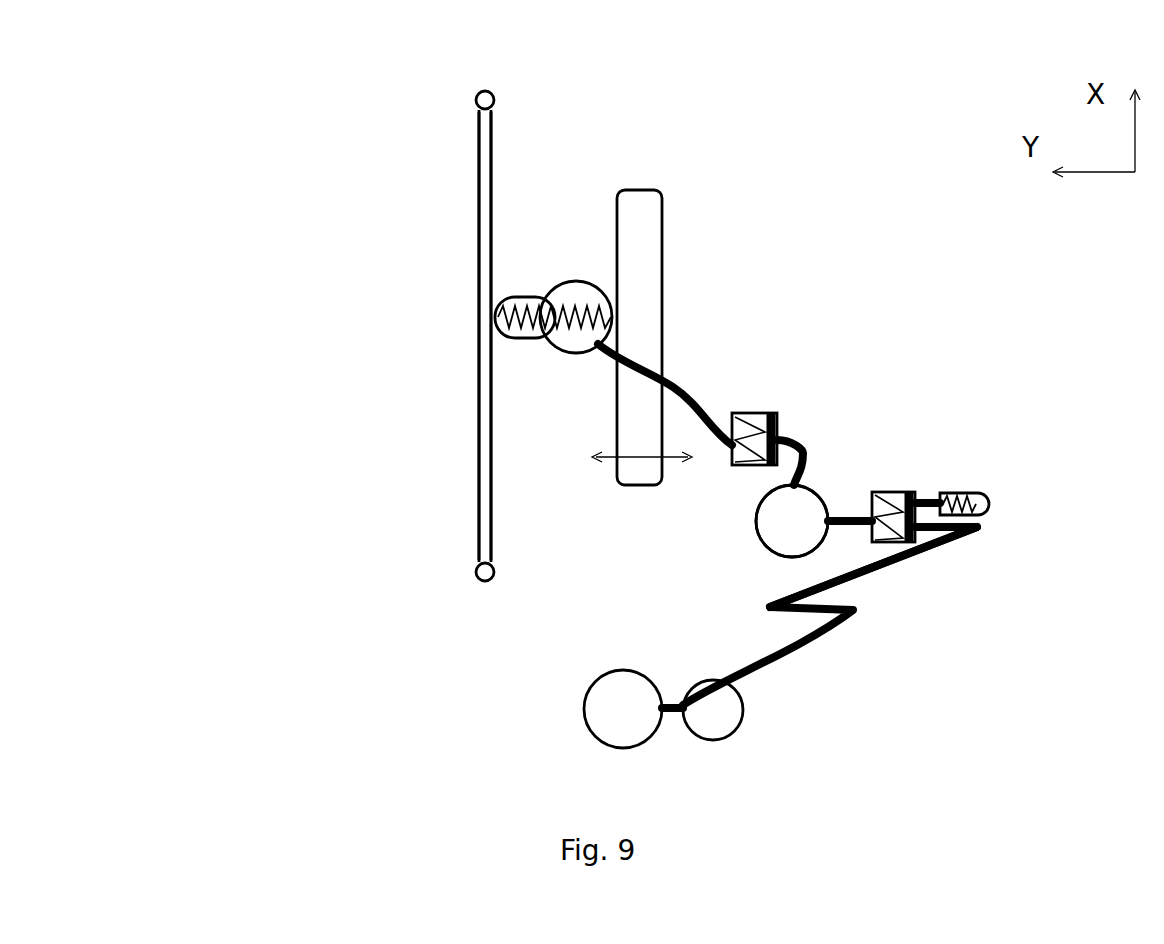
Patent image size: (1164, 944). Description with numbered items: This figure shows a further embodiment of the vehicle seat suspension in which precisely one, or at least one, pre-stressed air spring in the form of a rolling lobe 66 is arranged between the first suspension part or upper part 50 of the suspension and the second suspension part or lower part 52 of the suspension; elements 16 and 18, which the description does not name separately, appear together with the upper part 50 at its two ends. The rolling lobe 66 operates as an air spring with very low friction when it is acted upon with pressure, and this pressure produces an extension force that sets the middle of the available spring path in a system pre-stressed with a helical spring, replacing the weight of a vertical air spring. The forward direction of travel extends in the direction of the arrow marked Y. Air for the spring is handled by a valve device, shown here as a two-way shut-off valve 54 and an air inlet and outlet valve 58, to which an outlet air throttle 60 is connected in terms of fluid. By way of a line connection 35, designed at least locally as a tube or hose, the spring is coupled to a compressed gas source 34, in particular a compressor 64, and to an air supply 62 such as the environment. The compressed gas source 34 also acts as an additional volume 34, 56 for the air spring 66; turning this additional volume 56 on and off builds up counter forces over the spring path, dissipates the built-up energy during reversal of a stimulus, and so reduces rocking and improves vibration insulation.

The first end joint 16 is at (475, 100).
The second end joint 18 is at (475, 573).
The upper part of the suspension 50 is at (485, 336).
The lower part of the suspension 52 is at (655, 203).
The two-way shut-off valve 54 is at (772, 423).
The additional volume 56 is at (780, 508).
The compressed gas source 34 is at (792, 521).
The air inlet and outlet valve 58 is at (893, 492).
The outlet air throttle 60 is at (1080, 547).
The air supply 62 is at (586, 692).
The compressor 64 is at (745, 690).
The rolling lobe 66 is at (571, 258).
The line connection 35 is at (910, 575).